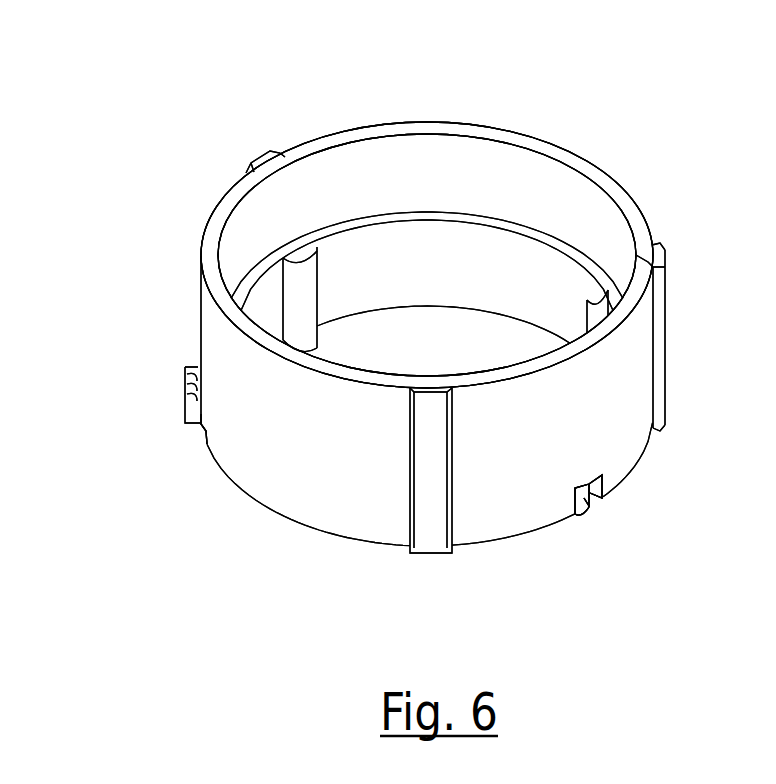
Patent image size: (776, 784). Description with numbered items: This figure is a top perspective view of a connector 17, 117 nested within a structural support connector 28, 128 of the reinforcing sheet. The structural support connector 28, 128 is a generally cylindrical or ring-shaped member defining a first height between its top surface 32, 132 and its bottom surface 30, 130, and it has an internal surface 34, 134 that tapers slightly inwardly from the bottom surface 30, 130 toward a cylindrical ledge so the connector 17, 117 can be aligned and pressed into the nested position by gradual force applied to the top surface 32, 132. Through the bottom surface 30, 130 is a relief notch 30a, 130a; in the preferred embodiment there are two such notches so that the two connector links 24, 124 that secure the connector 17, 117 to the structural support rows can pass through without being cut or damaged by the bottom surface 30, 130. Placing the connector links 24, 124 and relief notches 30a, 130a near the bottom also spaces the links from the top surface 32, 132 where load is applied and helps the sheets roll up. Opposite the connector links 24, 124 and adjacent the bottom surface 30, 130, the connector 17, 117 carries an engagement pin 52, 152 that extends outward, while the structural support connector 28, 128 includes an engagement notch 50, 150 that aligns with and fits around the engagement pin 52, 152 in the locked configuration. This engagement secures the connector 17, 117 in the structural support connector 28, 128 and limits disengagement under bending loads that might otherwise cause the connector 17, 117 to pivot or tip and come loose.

The connector 17 is at (472, 255).
The connector 117 is at (472, 255).
The connector link 24 is at (198, 423).
The connector link 124 is at (198, 423).
The structural support connector 28 is at (618, 193).
The structural support connector 128 is at (618, 193).
The bottom surface 30 is at (508, 543).
The bottom surface 130 is at (508, 543).
The relief notch 30a is at (187, 372).
The relief notch 130a is at (187, 372).
The top surface 32 is at (243, 178).
The top surface 132 is at (243, 178).
The internal surface 34 is at (363, 168).
The internal surface 134 is at (363, 168).
The engagement notch 50 is at (603, 487).
The engagement notch 150 is at (603, 487).
The engagement pin 52 is at (590, 507).
The engagement pin 152 is at (590, 507).